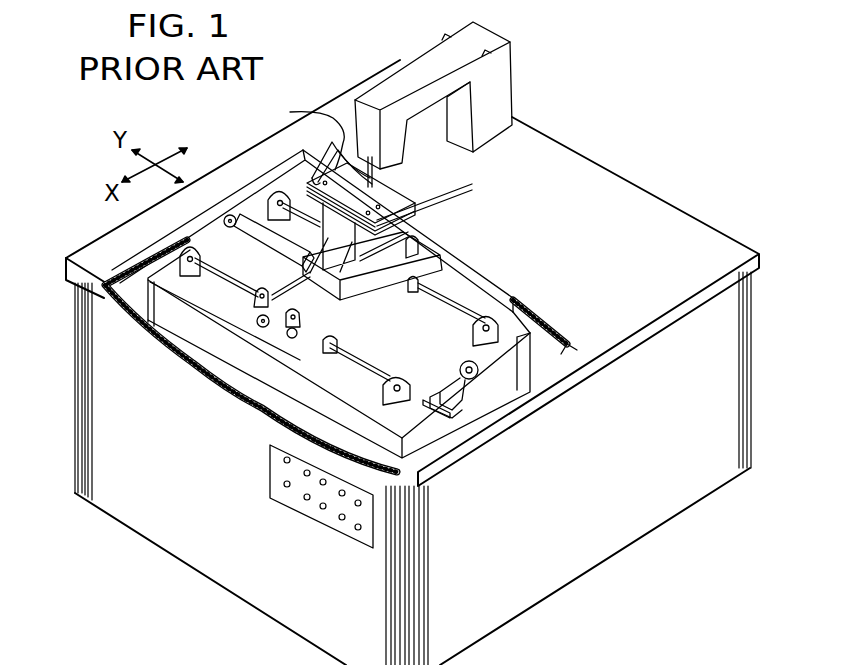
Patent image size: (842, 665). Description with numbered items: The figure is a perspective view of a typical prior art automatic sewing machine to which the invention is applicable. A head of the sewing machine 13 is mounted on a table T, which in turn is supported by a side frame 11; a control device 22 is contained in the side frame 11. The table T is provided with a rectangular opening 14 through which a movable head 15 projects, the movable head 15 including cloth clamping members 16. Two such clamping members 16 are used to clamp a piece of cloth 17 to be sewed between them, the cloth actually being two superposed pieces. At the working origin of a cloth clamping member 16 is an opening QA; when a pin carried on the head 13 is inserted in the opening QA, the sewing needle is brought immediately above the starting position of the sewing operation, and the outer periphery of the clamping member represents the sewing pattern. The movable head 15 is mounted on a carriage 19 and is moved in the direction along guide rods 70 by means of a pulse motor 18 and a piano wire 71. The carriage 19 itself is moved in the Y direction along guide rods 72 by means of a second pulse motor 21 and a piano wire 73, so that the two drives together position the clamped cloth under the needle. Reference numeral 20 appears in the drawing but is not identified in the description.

The side frame 11 is at (593, 548).
The head of the sewing machine 13 is at (512, 80).
The rectangular opening 14 is at (493, 288).
The movable head 15 is at (258, 208).
The cloth clamping member 16 is at (283, 130).
The piece of cloth 17 is at (300, 133).
The pulse motor 18 is at (261, 357).
The carriage 19 is at (425, 248).
The lower carriage 20 is at (210, 308).
The pulse motor 21 is at (440, 397).
The control device 22 is at (262, 436).
The guide rods 70 is at (280, 277).
The piano wire 71 is at (330, 317).
The guide rods 72 is at (210, 305).
The piano wire 73 is at (537, 377).
The table T is at (583, 170).
The opening at the working origin QA is at (380, 205).